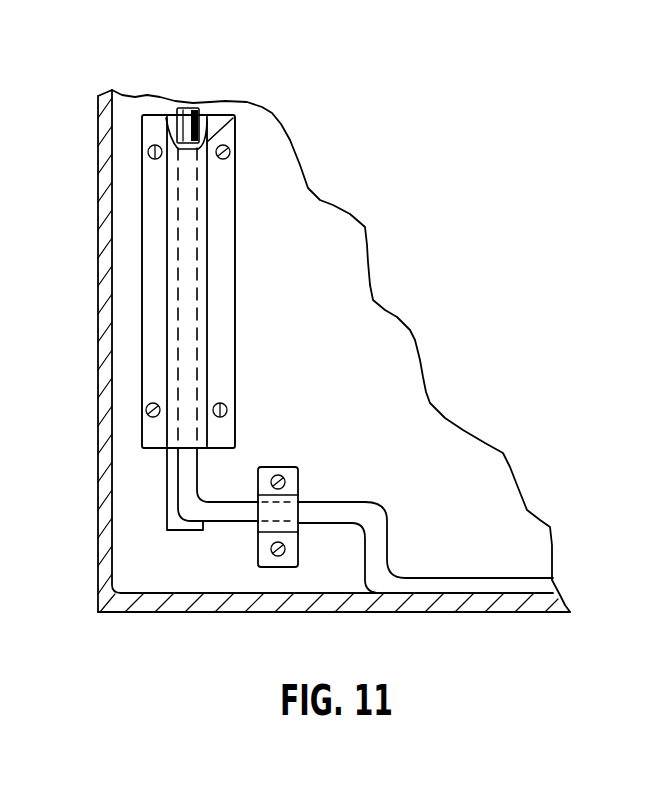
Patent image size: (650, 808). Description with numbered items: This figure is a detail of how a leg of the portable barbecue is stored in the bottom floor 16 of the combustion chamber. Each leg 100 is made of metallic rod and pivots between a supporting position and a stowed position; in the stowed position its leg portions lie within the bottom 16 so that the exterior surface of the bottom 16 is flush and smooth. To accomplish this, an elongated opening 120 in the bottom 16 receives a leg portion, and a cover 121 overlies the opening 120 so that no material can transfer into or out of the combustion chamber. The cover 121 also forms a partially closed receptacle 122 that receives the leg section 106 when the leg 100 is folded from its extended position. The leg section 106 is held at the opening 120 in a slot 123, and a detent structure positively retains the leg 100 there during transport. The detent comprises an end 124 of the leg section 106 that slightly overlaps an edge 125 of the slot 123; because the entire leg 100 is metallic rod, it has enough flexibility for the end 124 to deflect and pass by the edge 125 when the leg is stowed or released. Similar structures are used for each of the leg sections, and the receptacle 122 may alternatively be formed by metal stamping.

The bottom floor 16 is at (383, 430).
The leg 100 is at (363, 502).
The leg section 106 is at (187, 313).
The elongated opening 120 is at (207, 251).
The cover 121 is at (218, 367).
The partially closed receptacle 122 is at (167, 248).
The slot 123 is at (170, 118).
The end of the leg 124 is at (190, 108).
The edge of the slot 125 is at (218, 115).